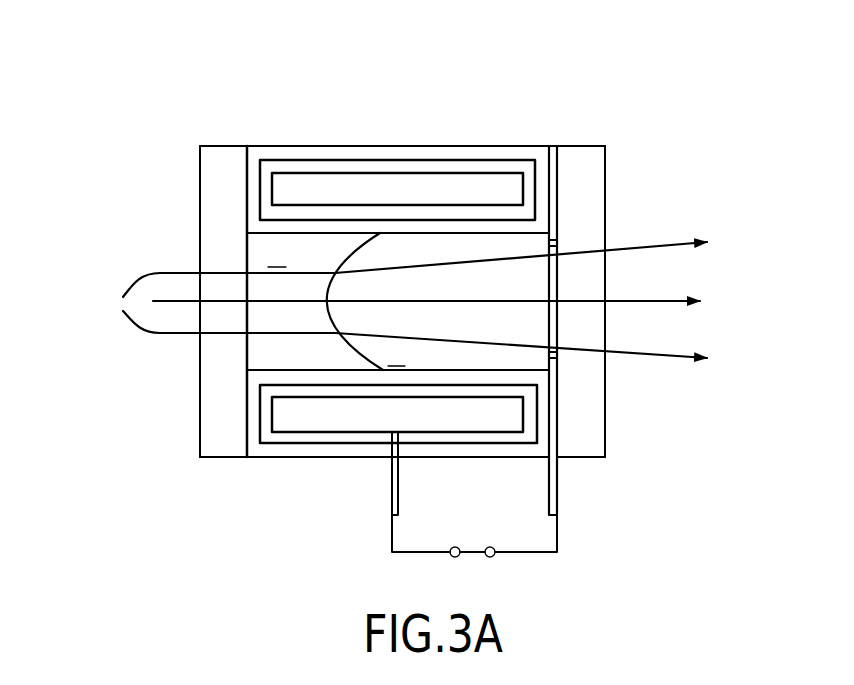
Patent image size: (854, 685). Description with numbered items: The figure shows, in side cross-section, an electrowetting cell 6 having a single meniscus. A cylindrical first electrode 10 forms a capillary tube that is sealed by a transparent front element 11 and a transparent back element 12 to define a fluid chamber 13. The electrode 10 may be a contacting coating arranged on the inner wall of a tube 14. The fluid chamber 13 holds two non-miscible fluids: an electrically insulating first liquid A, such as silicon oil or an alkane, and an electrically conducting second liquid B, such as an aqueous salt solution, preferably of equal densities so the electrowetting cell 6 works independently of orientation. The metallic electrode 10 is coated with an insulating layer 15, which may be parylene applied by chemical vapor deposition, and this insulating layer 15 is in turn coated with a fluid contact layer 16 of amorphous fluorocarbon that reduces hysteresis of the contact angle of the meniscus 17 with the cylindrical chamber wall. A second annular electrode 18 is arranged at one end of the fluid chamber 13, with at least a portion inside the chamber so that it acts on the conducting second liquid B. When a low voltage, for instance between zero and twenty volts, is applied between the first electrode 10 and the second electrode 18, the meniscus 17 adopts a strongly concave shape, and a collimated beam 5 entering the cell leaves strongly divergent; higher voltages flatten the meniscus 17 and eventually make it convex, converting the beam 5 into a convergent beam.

The collimated beam 5 is at (110, 285).
The electrowetting cell 6 is at (406, 113).
The first electrode 10 is at (443, 188).
The transparent front element 11 is at (231, 165).
The transparent back element 12 is at (580, 163).
The fluid chamber 13 is at (528, 272).
The tube 14 is at (539, 153).
The insulating layer 15 is at (268, 213).
The fluid contact layer 16 is at (300, 228).
The meniscus 17 is at (347, 344).
The second annular electrode 18 is at (558, 378).